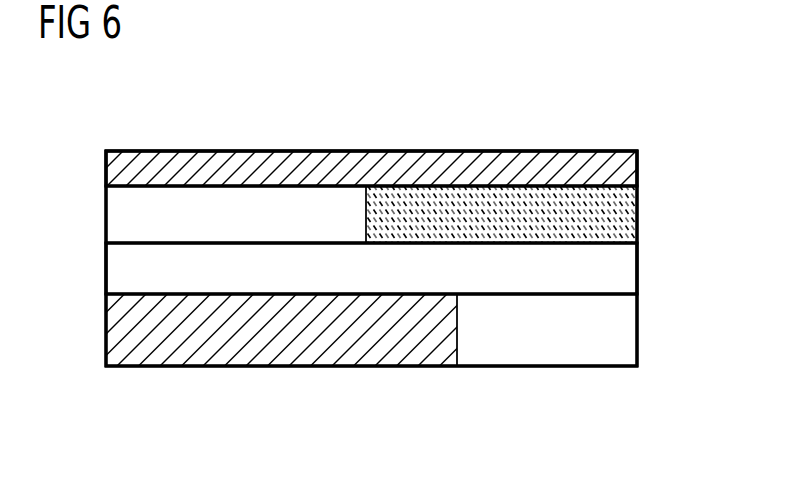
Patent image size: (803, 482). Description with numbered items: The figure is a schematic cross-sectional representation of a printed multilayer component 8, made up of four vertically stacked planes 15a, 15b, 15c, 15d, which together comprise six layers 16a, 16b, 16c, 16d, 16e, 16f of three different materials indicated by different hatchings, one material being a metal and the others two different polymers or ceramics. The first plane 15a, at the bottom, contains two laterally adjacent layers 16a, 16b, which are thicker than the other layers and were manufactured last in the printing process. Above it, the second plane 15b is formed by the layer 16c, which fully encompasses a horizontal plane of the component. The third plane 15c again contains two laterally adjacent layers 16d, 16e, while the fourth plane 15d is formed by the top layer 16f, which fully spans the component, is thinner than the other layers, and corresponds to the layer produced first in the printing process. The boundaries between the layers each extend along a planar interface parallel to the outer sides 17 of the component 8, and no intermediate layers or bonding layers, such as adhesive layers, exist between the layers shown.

The layered component 8 is at (112, 128).
The first plane 15a is at (643, 295).
The second plane 15b is at (653, 244).
The third plane 15c is at (642, 187).
The fourth plane 15d is at (653, 151).
The first layer 16a is at (512, 356).
The second layer 16b is at (297, 355).
The third layer 16c is at (192, 280).
The fourth layer 16d is at (547, 198).
The fifth layer 16e is at (280, 200).
The top layer 16f is at (191, 157).
The outer sides 17 is at (407, 150).